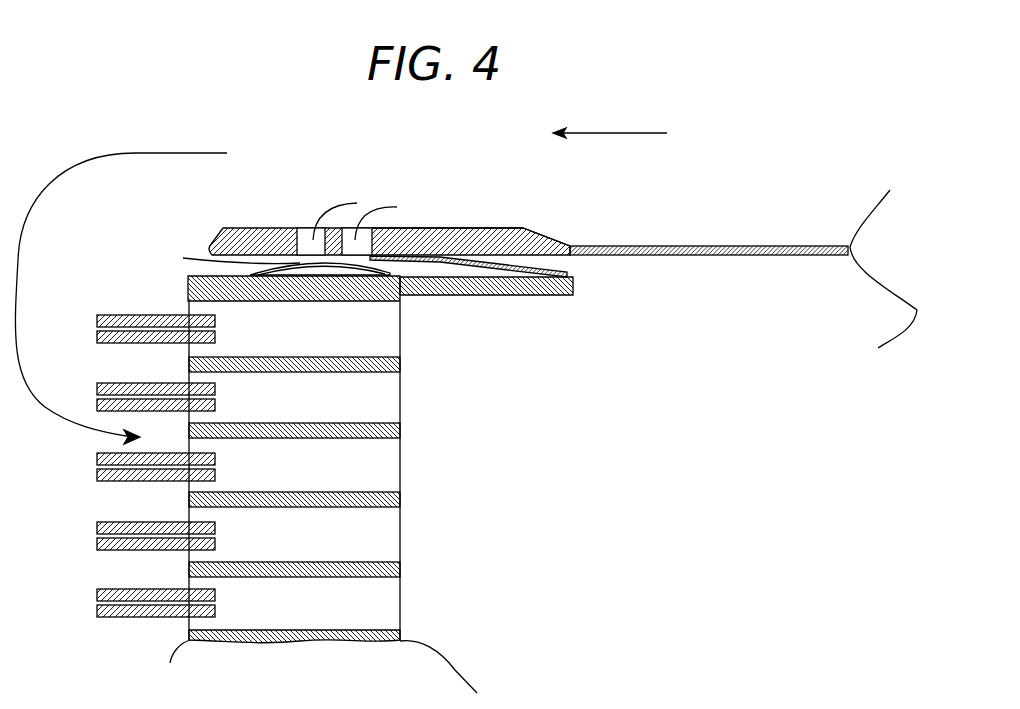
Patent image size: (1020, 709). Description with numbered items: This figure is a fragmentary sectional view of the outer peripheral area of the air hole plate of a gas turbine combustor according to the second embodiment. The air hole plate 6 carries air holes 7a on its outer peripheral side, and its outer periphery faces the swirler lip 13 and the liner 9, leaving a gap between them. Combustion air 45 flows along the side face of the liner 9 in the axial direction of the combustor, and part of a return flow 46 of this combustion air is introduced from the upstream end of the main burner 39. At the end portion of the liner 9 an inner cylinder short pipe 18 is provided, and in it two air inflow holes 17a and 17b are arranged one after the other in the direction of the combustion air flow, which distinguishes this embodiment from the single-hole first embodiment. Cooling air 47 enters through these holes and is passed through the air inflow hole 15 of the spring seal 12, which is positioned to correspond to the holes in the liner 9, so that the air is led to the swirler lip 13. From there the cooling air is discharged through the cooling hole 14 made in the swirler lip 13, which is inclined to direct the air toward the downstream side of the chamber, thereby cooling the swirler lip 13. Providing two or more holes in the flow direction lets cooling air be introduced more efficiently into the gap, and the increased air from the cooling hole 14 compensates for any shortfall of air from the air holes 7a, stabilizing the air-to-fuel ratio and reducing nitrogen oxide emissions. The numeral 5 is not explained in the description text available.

The heat radiating fins 5 is at (100, 477).
The air hole plate 6 is at (400, 430).
The air holes 7a is at (322, 346).
The liner 9 is at (693, 245).
The spring seal 12 is at (547, 235).
The swirler lip 13 is at (573, 294).
The cooling hole 14 is at (488, 278).
The air inflow hole 15 is at (403, 228).
The air inflow hole 17a is at (303, 233).
The air inflow hole 17b is at (365, 228).
The inner cylinder short pipe 18 is at (258, 228).
The main burner 39 is at (400, 501).
The combustion air 45 is at (667, 133).
The return flow 46 is at (25, 253).
The cooling air 47 is at (340, 202).